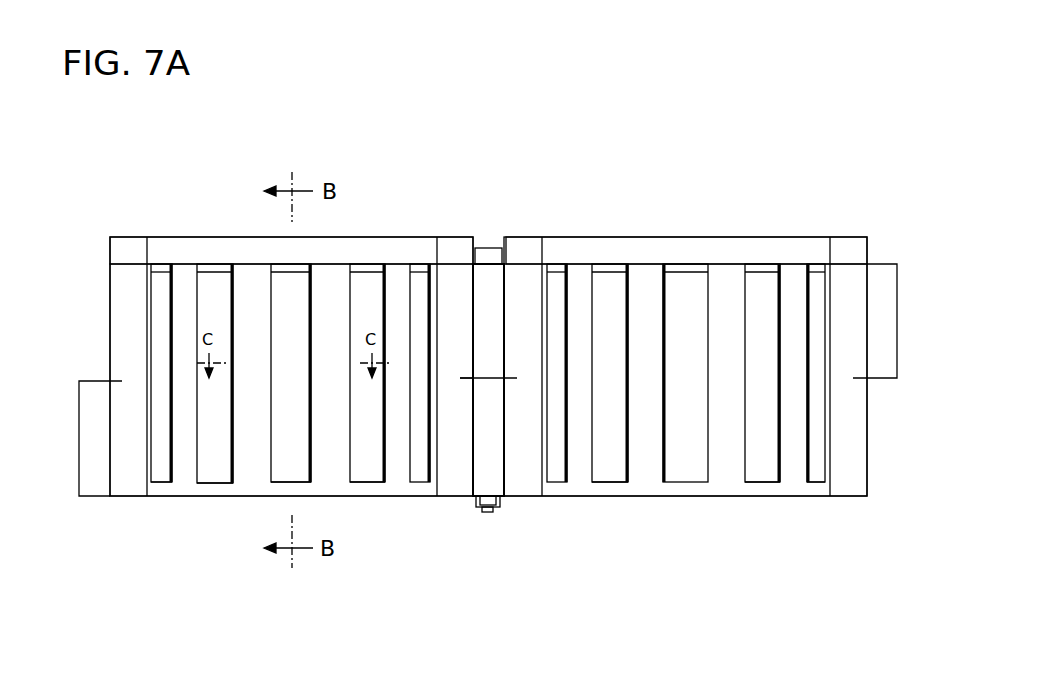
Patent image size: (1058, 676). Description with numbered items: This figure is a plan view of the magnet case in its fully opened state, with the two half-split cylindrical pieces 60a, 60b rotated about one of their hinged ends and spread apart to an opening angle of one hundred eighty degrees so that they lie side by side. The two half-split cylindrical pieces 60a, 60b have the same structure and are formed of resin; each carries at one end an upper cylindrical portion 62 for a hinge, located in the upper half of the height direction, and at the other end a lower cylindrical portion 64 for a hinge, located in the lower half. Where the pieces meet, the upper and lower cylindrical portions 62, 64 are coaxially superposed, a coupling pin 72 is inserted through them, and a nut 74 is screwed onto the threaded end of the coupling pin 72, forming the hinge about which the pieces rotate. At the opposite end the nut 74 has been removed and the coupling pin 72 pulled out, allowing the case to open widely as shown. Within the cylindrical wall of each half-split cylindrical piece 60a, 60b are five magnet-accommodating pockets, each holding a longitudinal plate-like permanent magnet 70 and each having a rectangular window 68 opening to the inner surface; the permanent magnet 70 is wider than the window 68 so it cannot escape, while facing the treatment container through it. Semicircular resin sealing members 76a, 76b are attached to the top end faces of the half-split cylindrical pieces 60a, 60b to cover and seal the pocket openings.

The half-split cylindrical piece 60a is at (218, 504).
The half-split cylindrical piece 60b is at (688, 506).
The upper cylindrical portion for a hinge 62 is at (492, 318).
The lower cylindrical portion for a hinge 64 is at (93, 450).
The window 68 is at (200, 458).
The permanent magnet 70 is at (217, 297).
The coupling pin 72 is at (489, 256).
The nut 74 is at (477, 502).
The sealing member 76a is at (185, 250).
The sealing member 76b is at (730, 250).